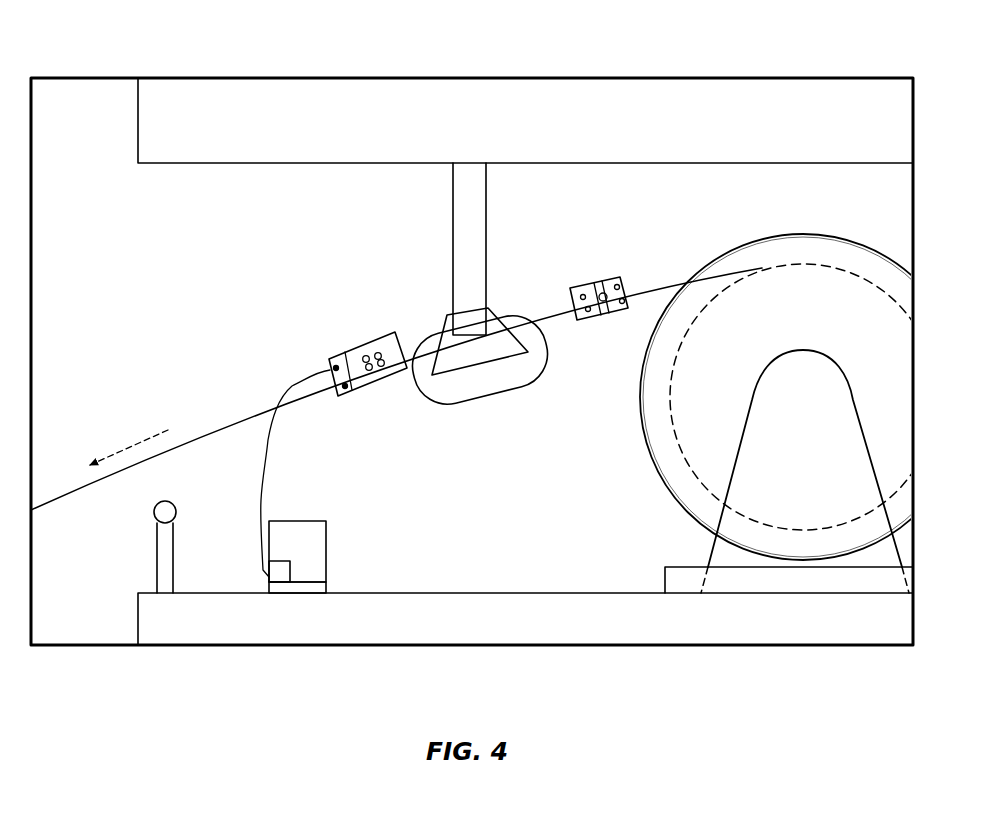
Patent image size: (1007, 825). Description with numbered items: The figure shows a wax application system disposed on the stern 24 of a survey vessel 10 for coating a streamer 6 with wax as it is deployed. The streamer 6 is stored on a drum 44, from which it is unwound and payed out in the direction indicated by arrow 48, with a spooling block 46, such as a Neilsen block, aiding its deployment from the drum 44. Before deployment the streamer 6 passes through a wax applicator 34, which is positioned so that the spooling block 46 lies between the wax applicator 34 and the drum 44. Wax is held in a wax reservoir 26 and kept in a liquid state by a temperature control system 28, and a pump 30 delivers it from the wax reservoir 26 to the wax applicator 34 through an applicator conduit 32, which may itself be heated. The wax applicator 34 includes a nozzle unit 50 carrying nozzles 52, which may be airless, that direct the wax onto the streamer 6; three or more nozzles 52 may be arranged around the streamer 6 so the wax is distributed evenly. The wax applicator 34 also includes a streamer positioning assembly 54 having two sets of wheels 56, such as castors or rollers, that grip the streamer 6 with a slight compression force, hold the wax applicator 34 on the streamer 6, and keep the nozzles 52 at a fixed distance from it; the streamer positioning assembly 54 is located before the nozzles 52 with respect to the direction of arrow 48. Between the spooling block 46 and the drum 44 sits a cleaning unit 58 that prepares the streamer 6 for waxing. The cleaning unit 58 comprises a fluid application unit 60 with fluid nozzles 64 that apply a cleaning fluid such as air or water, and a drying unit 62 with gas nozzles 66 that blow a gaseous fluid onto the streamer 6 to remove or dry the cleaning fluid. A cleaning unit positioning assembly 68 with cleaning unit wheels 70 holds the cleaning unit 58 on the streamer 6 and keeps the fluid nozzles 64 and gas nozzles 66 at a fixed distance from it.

The survey vessel 10 is at (870, 56).
The streamer 6 is at (221, 422).
The stern 24 is at (503, 613).
The wax reservoir 26 is at (327, 548).
The temperature control system 28 is at (327, 590).
The pump 30 is at (268, 578).
The applicator conduit 32 is at (259, 497).
The wax applicator 34 is at (365, 347).
The drum 44 is at (870, 247).
The spooling block 46 is at (450, 315).
The arrow 48 is at (125, 448).
The nozzle unit 50 is at (351, 392).
The nozzles 52 is at (336, 371).
The streamer positioning assembly 54 is at (383, 368).
The wheels 56 is at (379, 353).
The cleaning unit 58 is at (598, 283).
The fluid application unit 60 is at (607, 281).
The drying unit 62 is at (581, 295).
The fluid nozzles 64 is at (628, 300).
The gas nozzles 66 is at (580, 312).
The cleaning unit positioning assembly 68 is at (605, 305).
The cleaning unit wheels 70 is at (596, 290).